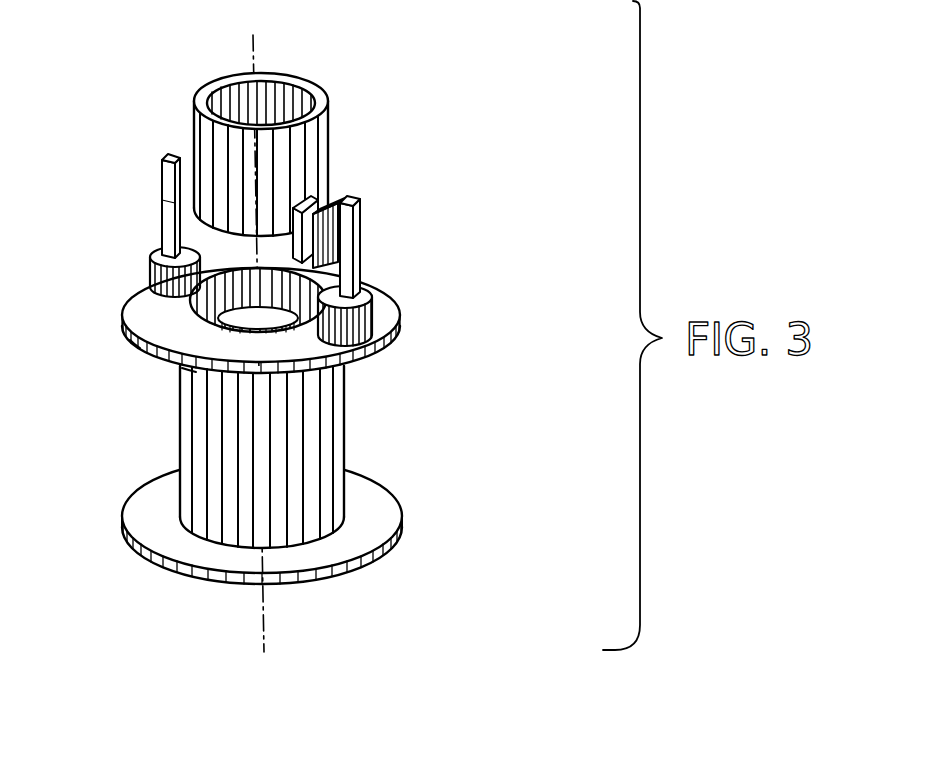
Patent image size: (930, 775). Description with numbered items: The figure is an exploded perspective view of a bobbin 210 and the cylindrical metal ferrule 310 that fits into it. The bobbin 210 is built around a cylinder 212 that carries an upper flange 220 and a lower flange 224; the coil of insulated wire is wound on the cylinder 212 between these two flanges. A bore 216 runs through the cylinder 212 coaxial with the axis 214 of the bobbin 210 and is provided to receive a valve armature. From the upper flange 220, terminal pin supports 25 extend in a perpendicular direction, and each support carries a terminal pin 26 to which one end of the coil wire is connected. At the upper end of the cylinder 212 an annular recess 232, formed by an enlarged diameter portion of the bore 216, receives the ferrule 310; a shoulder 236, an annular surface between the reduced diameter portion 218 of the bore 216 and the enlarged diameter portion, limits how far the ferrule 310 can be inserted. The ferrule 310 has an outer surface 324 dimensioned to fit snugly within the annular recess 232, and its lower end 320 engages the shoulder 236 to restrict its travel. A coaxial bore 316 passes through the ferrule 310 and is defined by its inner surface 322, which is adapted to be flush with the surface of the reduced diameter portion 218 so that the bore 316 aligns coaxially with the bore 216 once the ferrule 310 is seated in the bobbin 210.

The ferrule 310 is at (417, 78).
The bore 316 is at (278, 136).
The inner surface 322 is at (233, 93).
The outer surface 324 is at (323, 186).
The lower end 320 is at (162, 178).
The terminal pin 26 is at (160, 174).
The terminal pin support 25 is at (150, 262).
The bobbin 210 is at (440, 226).
The axis 214 is at (247, 224).
The bore 216 is at (124, 309).
The reduced diameter portion 218 is at (212, 306).
The upper flange 220 is at (380, 287).
The annular recess 232 is at (133, 342).
The shoulder 236 is at (190, 366).
The cylinder 212 is at (347, 450).
The lower flange 224 is at (385, 513).